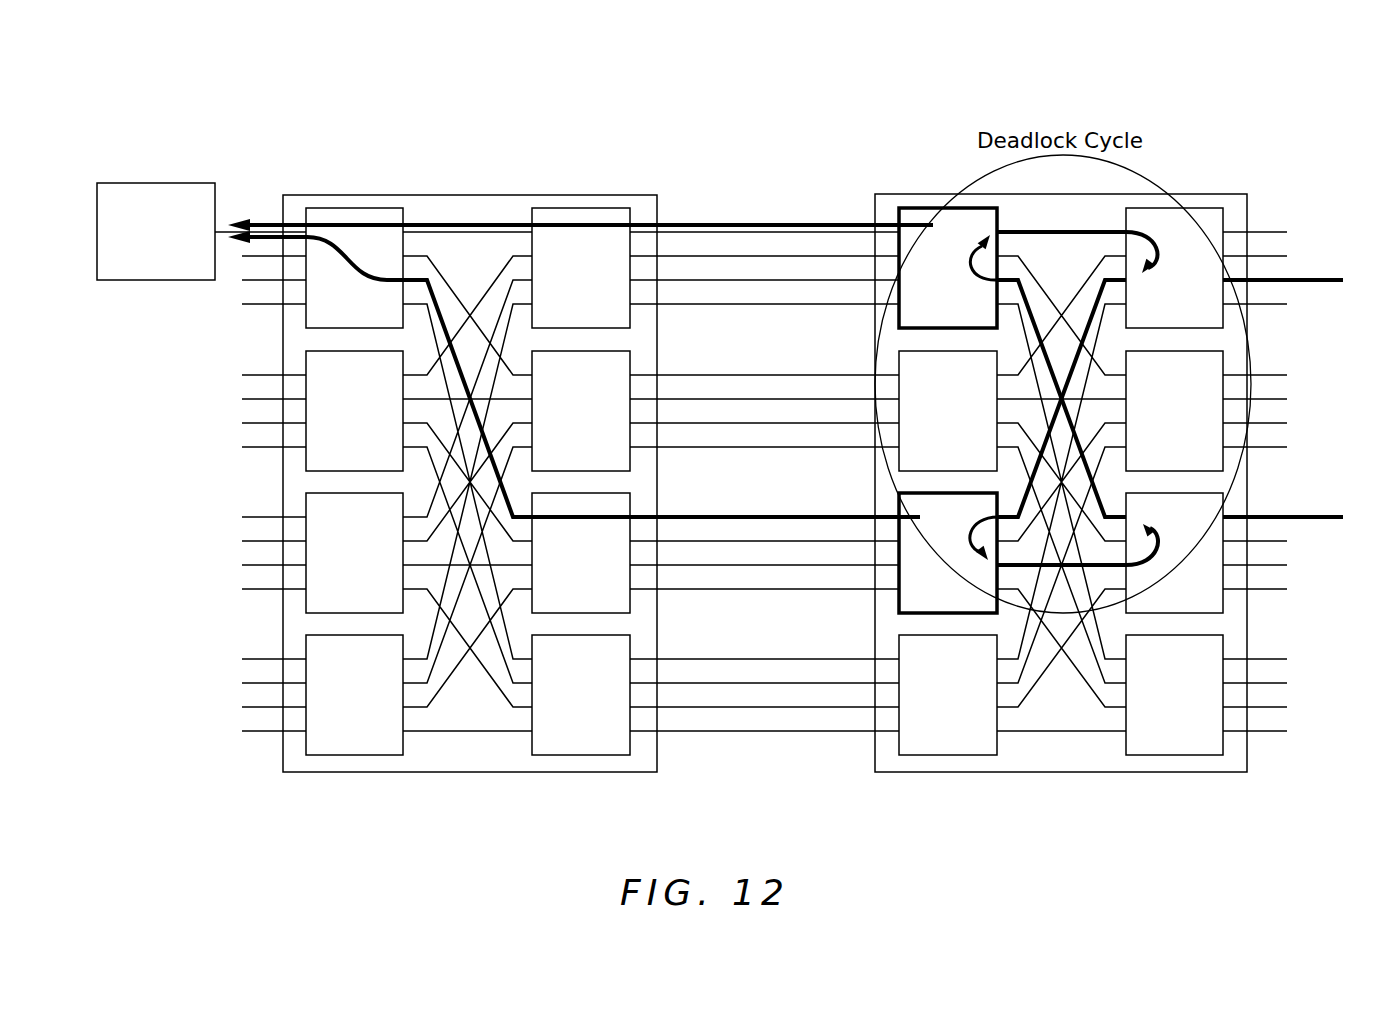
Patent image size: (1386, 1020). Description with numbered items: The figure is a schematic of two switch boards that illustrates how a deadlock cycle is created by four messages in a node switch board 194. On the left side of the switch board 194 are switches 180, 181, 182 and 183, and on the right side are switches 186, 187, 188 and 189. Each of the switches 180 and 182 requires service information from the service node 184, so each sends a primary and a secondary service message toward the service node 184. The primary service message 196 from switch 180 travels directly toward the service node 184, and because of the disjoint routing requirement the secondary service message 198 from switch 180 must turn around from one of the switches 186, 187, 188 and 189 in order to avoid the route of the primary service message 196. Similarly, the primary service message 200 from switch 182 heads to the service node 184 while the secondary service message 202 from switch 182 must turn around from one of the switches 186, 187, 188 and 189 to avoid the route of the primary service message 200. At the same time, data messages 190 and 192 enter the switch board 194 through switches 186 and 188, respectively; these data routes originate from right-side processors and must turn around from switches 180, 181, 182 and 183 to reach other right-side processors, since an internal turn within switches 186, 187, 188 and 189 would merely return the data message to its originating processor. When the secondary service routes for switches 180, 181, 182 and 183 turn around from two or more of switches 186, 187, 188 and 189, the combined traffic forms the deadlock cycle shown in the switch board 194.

The switch 180 is at (962, 208).
The switch 181 is at (895, 363).
The switch 182 is at (888, 598).
The switch 183 is at (888, 742).
The service node 184 is at (152, 190).
The switch 186 is at (1223, 217).
The switch 187 is at (1225, 362).
The switch 188 is at (1225, 596).
The switch 189 is at (1225, 740).
The data message 190 is at (1345, 303).
The data message 192 is at (1343, 545).
The switch board 194 is at (1277, 148).
The primary service message 196 is at (732, 218).
The secondary service message 198 is at (1048, 226).
The primary service message 200 is at (715, 521).
The secondary service message 202 is at (1102, 568).